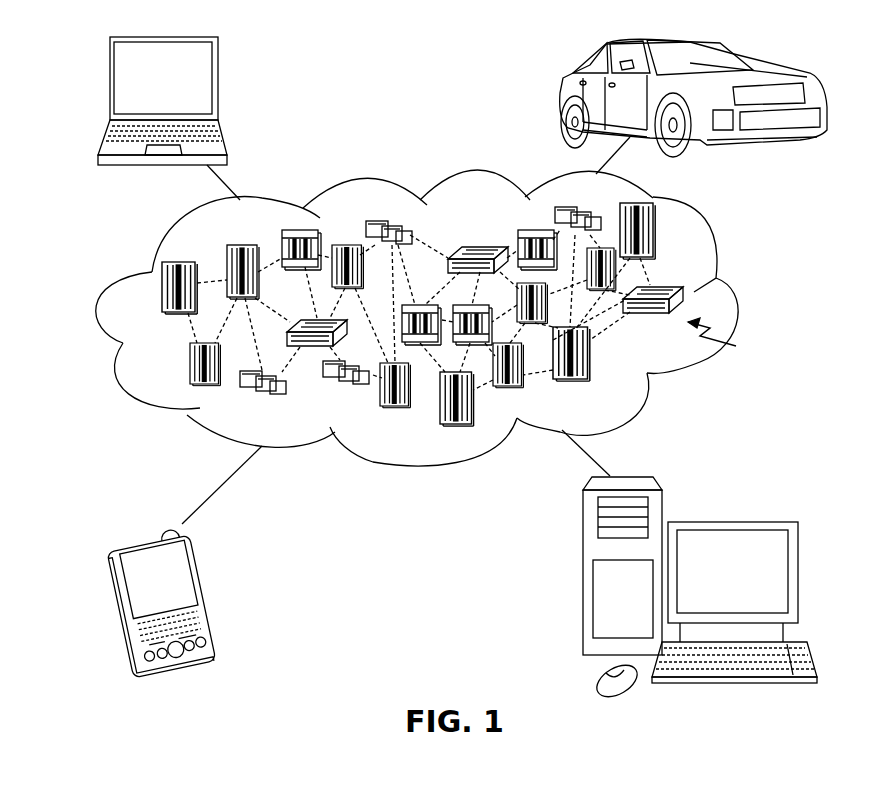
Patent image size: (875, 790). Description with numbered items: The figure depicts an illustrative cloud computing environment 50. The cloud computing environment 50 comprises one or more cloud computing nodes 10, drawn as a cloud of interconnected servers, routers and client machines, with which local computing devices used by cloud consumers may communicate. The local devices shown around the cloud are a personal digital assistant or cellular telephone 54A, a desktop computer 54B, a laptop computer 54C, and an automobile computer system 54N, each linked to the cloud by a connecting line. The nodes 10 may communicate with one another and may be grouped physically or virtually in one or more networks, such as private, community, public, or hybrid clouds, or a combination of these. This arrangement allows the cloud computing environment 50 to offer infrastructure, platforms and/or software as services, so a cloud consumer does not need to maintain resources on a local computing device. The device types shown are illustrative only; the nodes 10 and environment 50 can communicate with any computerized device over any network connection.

The cloud computing nodes 10 is at (725, 337).
The cloud computing environment 50 is at (733, 296).
The personal digital assistant or cellular telephone 54A is at (222, 596).
The desktop computer 54B is at (731, 521).
The laptop computer 54C is at (219, 84).
The automobile computer system 54N is at (560, 100).